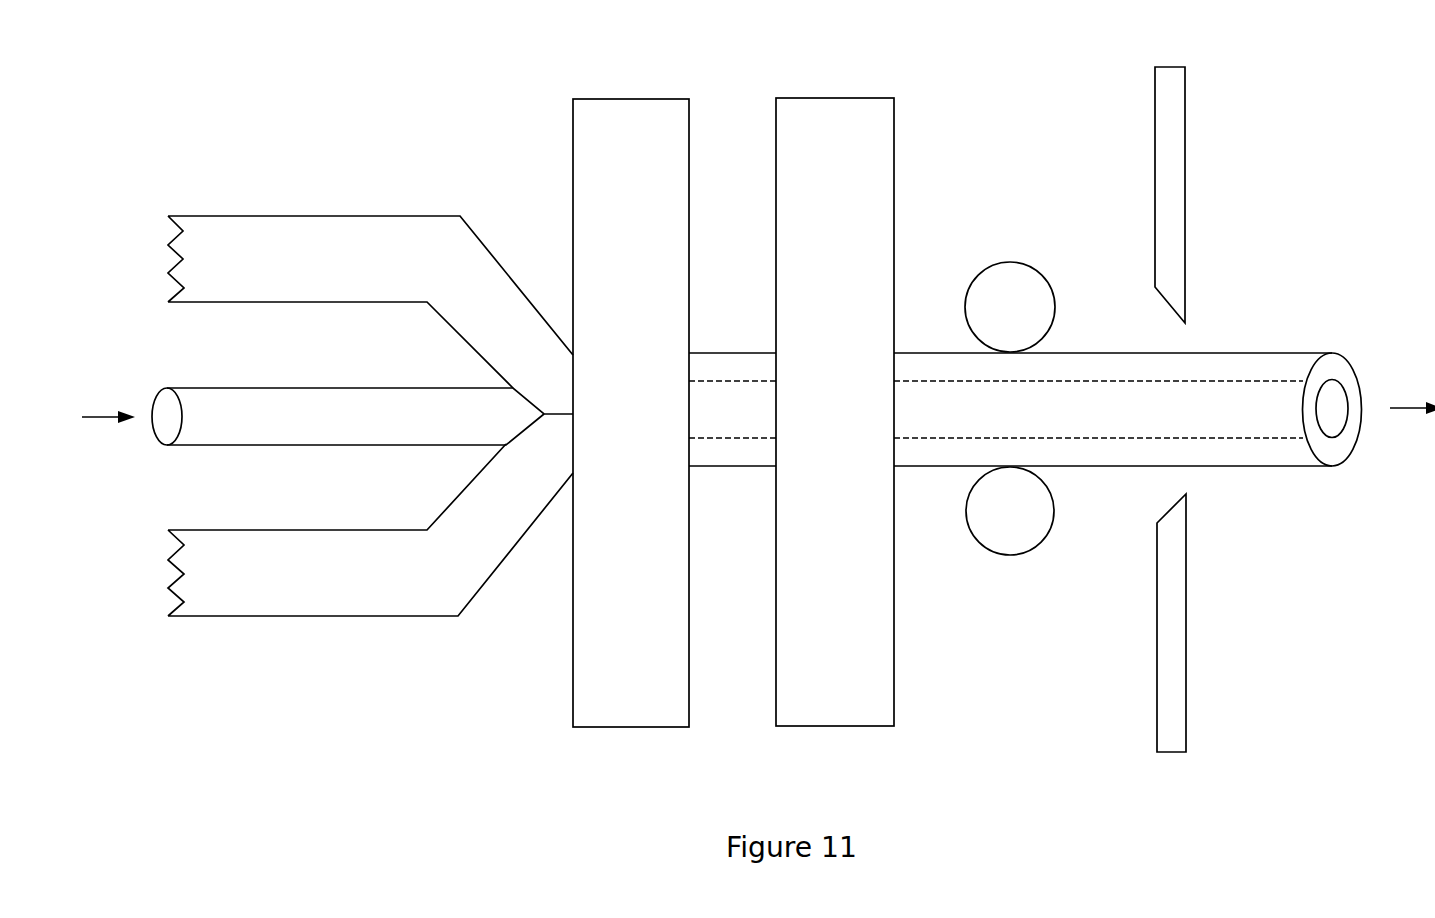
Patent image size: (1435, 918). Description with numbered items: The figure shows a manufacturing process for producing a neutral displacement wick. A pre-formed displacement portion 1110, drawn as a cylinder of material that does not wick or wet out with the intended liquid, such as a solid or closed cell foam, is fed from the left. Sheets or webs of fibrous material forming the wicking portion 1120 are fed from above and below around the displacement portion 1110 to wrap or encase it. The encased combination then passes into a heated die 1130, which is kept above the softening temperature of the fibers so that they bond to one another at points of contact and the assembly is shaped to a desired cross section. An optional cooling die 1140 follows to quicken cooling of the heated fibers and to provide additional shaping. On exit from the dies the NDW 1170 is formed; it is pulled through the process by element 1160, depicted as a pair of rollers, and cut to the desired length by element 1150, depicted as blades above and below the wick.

The displacement portion 1110 is at (310, 432).
The wicking portion 1120 is at (282, 272).
The heated die 1130 is at (658, 199).
The cooling die 1140 is at (862, 199).
The cutting element 1150 is at (1185, 257).
The pulling element 1160 is at (1028, 262).
The neutral displacement wick (NDW) 1170 is at (1273, 466).